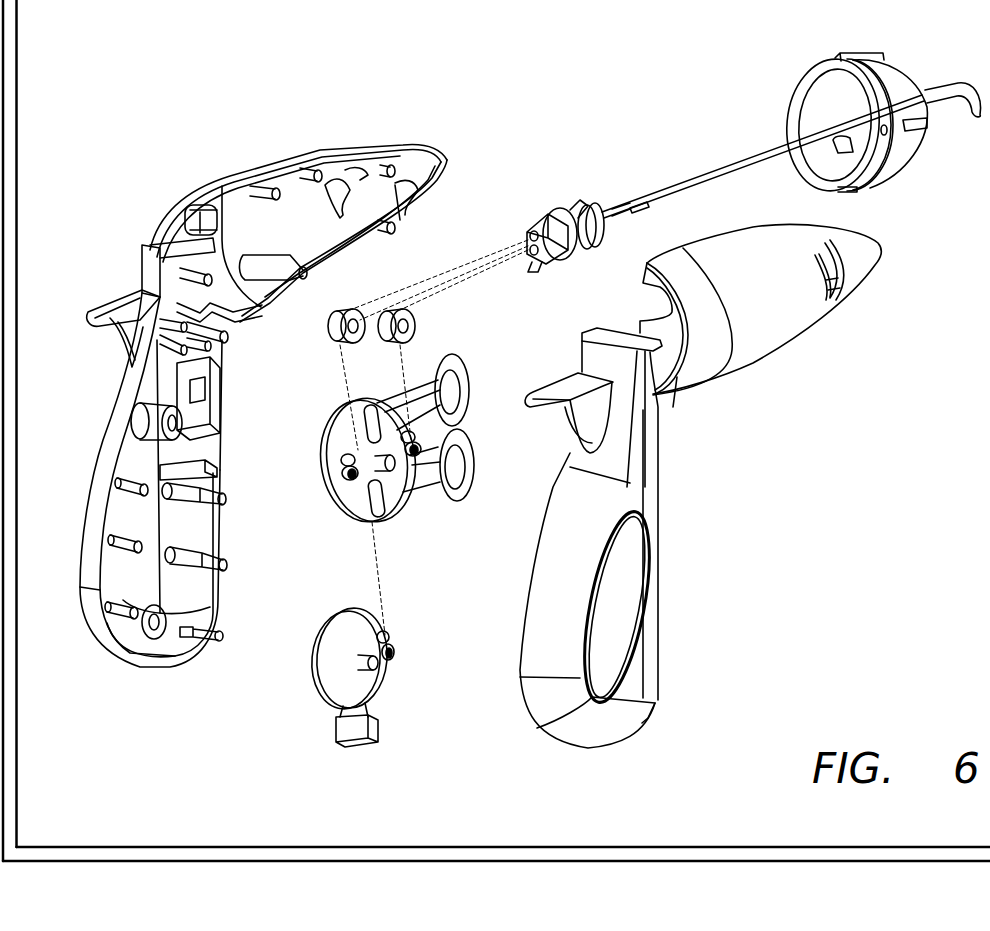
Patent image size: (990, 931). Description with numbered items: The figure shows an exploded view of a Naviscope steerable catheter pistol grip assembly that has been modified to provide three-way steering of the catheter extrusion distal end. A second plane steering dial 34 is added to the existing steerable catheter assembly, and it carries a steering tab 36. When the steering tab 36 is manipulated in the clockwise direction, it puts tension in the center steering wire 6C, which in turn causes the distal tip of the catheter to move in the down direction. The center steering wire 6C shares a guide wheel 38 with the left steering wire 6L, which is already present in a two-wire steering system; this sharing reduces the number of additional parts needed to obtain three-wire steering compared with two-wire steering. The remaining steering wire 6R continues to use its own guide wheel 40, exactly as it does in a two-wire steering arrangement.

The left steering wire 6L is at (462, 267).
The steering wire 6R is at (442, 290).
The center steering wire 6C is at (375, 558).
The guide wheel 38 is at (332, 344).
The guide wheel 40 is at (382, 350).
The second plane steering dial 34 is at (323, 630).
The steering tab 36 is at (370, 750).